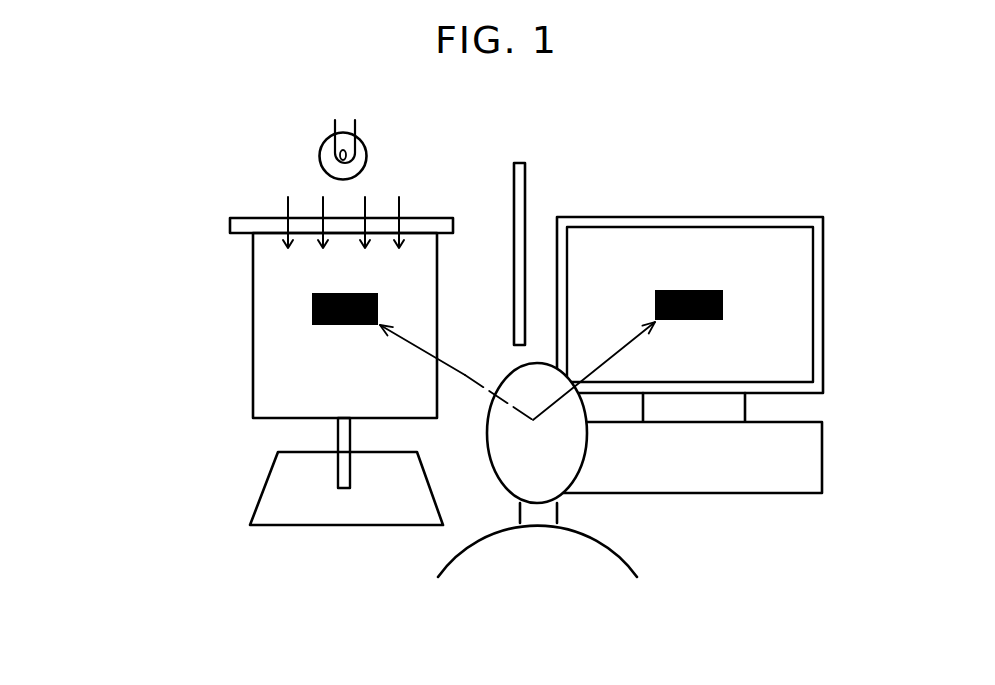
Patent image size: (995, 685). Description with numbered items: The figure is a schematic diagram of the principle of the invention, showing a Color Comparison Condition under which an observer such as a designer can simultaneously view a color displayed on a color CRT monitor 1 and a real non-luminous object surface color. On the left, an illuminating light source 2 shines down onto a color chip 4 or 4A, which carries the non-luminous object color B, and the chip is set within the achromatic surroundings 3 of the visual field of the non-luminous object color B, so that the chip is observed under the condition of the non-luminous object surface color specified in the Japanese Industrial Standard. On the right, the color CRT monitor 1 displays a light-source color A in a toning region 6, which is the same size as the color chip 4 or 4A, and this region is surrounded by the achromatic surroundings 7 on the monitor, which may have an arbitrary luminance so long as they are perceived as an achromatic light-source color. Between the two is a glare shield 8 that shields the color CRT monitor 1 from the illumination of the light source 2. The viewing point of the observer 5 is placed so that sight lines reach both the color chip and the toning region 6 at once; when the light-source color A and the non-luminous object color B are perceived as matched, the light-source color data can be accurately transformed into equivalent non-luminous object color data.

The color CRT monitor 1 is at (719, 324).
The illuminating light source 2 is at (361, 148).
The achromatic surroundings 3 is at (280, 383).
The color chip 4 is at (260, 304).
The color chip 4A is at (279, 282).
The viewing point of the observer 5 is at (535, 420).
The toning region 6 is at (766, 238).
The achromatic surroundings 7 is at (787, 330).
The glare shield 8 is at (520, 182).
The light-source color A is at (685, 290).
The non-luminous object color B is at (312, 293).